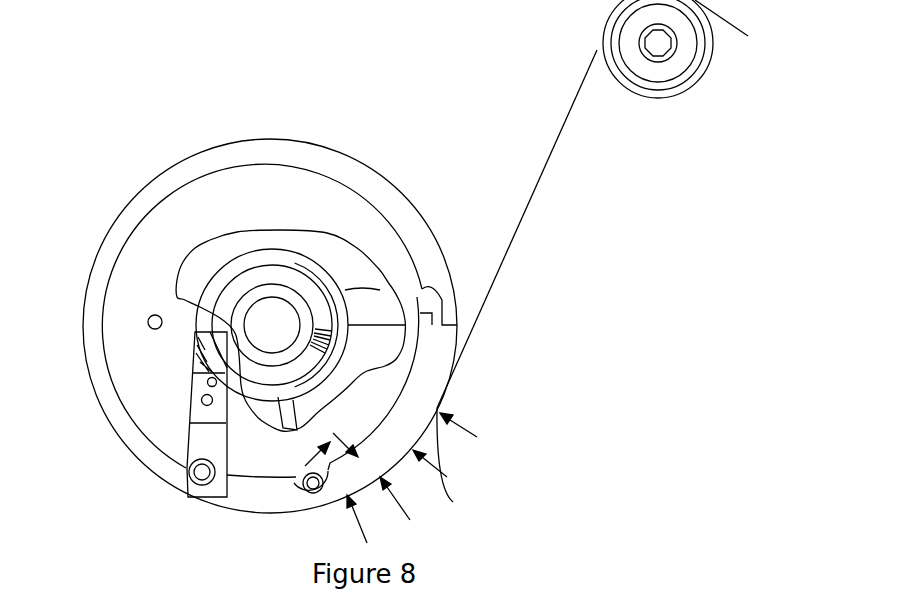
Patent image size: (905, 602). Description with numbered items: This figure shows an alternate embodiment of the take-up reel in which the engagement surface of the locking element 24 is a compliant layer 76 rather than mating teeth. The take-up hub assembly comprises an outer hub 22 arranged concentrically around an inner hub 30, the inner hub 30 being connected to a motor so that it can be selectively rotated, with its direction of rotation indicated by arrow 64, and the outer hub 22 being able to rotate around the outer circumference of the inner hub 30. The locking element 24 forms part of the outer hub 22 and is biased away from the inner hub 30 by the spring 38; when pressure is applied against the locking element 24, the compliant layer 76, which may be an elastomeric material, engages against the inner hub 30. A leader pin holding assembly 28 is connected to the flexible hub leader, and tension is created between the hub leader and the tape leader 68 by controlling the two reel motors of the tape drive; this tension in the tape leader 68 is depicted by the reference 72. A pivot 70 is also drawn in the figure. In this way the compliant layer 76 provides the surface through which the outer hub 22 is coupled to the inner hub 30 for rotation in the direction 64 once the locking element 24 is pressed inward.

The outer hub 22 is at (146, 301).
The locking element 24 is at (399, 478).
The leader pin holding assembly 28 is at (198, 448).
The inner hub 30 is at (223, 300).
The spring 38 is at (342, 458).
The direction of rotation 64 is at (286, 262).
The tape leader 68 is at (484, 297).
The pivot pin 70 is at (207, 488).
The tension in the tape leader 72 is at (548, 222).
The compliant layer 76 is at (345, 366).